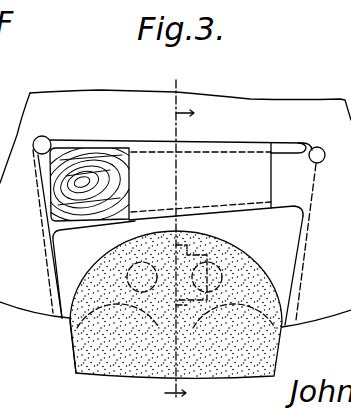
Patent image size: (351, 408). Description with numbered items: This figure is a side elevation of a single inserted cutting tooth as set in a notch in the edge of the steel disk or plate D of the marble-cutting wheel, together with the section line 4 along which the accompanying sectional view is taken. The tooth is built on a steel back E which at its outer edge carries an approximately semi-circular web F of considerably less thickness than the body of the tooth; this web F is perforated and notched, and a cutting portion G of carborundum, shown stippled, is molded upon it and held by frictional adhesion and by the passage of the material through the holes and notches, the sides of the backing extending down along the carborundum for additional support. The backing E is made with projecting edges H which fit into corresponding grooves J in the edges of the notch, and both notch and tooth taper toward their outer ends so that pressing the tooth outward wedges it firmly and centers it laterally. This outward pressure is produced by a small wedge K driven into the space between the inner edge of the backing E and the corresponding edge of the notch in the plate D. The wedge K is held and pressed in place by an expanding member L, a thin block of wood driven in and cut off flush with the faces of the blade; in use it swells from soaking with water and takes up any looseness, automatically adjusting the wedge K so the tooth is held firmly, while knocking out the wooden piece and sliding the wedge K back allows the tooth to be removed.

The section line 4— 4 is at (179, 229).
The disk or plate D is at (175, 208).
The back E is at (84, 234).
The web F is at (256, 248).
The cutting portion G is at (80, 347).
The projecting edges H is at (313, 261).
The grooves J is at (323, 181).
The wedge K is at (178, 180).
The expanding member L is at (55, 188).